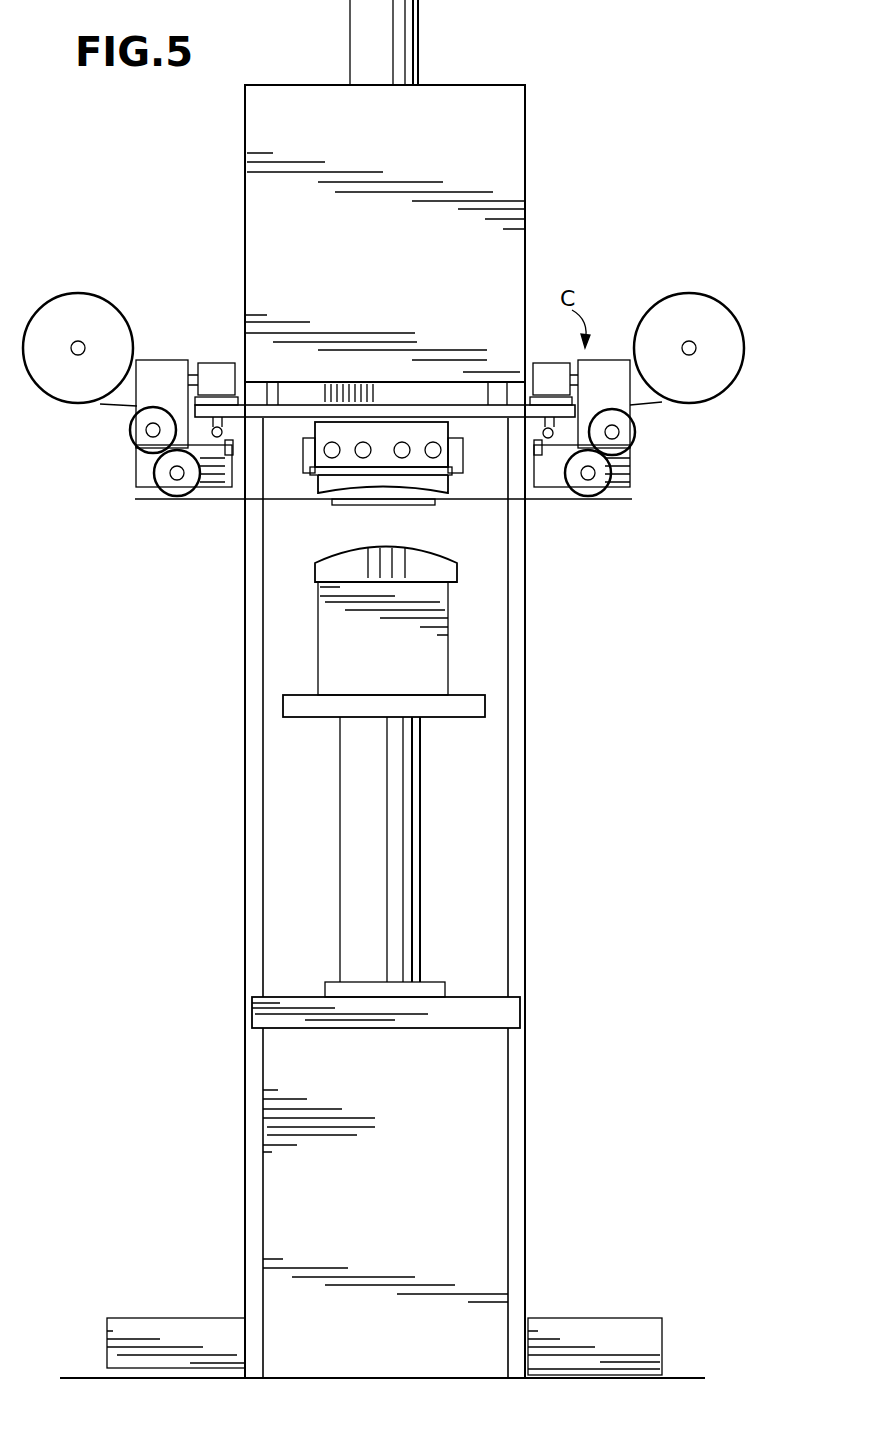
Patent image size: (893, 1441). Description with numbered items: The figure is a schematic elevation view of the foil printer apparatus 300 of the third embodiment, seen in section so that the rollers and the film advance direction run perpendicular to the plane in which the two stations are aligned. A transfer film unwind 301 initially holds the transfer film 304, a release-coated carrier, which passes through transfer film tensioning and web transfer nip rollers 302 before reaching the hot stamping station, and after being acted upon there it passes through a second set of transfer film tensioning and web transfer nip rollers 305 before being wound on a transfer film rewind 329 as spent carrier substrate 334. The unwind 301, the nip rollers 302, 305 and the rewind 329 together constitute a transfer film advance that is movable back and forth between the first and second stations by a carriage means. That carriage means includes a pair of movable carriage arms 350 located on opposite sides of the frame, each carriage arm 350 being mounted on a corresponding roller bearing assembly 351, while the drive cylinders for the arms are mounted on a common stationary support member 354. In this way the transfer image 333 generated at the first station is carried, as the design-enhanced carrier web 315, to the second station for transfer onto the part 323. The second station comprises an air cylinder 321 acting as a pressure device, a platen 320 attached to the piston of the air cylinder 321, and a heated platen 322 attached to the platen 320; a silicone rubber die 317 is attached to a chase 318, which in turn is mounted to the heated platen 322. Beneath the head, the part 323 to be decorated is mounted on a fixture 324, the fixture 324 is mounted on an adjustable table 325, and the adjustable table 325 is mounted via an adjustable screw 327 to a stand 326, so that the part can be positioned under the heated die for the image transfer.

The foil printer apparatus 300 is at (185, 161).
The transfer film unwind 301 is at (85, 312).
The transfer film tensioning and web transfer nip rollers 302 is at (140, 432).
The transfer film 304 is at (110, 408).
The transfer film tensioning and web transfer nip rollers 305 is at (625, 433).
The design-enhanced carrier web 315 is at (557, 502).
The silicone rubber die 317 is at (330, 482).
The chase 318 is at (375, 476).
The platen 320 is at (322, 394).
The air cylinder 321 is at (362, 50).
The heated platen 322 is at (420, 440).
The part 323 is at (318, 565).
The fixture 324 is at (342, 645).
The adjustable table 325 is at (460, 710).
The stand 326 is at (428, 1012).
The adjustable screw 327 is at (352, 800).
The transfer film rewind 329 is at (715, 340).
The transfer image 333 is at (393, 506).
The spent carrier substrate 334 is at (655, 405).
The carriage arms 350 is at (172, 372).
The roller bearing assembly 351 is at (222, 486).
The stationary support member 354 is at (375, 410).